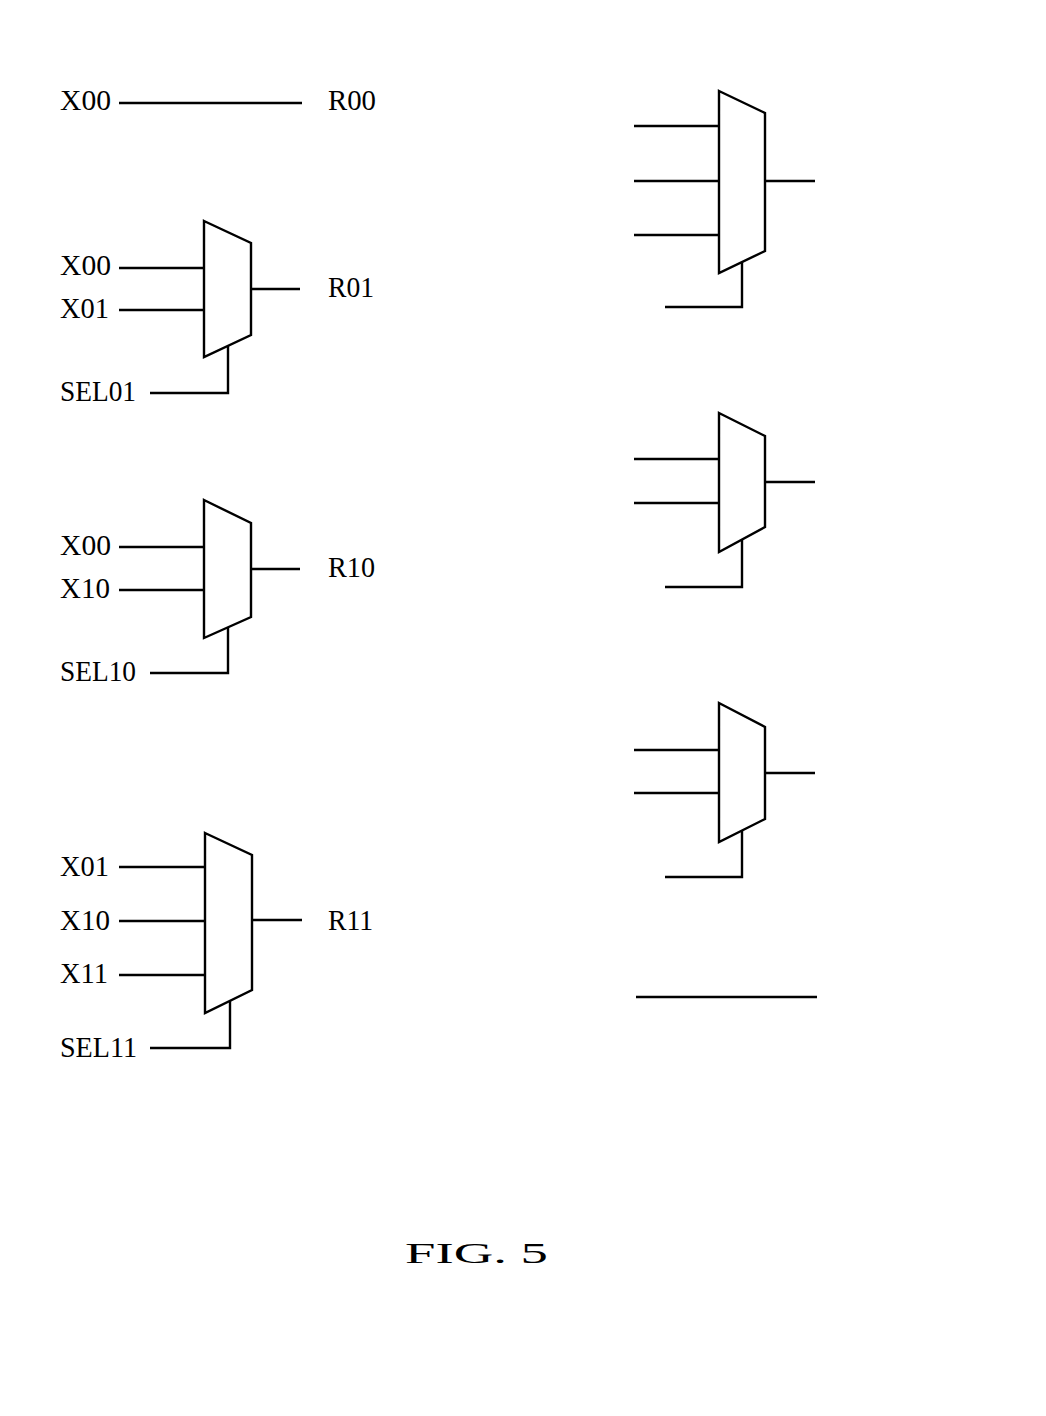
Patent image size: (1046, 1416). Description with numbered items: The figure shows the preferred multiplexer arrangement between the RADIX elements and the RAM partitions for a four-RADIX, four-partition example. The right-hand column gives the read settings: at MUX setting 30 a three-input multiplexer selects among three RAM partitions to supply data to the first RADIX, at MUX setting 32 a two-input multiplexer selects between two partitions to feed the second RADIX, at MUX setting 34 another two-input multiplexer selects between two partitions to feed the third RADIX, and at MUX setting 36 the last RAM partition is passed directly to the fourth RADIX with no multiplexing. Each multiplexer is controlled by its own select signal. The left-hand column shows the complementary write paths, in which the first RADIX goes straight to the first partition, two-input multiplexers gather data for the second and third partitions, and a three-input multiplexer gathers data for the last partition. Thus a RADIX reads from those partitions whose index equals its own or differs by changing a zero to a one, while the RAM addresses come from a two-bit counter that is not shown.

The MUX setting 30 is at (779, 102).
The MUX setting 32 is at (779, 423).
The MUX setting 34 is at (779, 713).
The MUX setting 36 is at (756, 975).